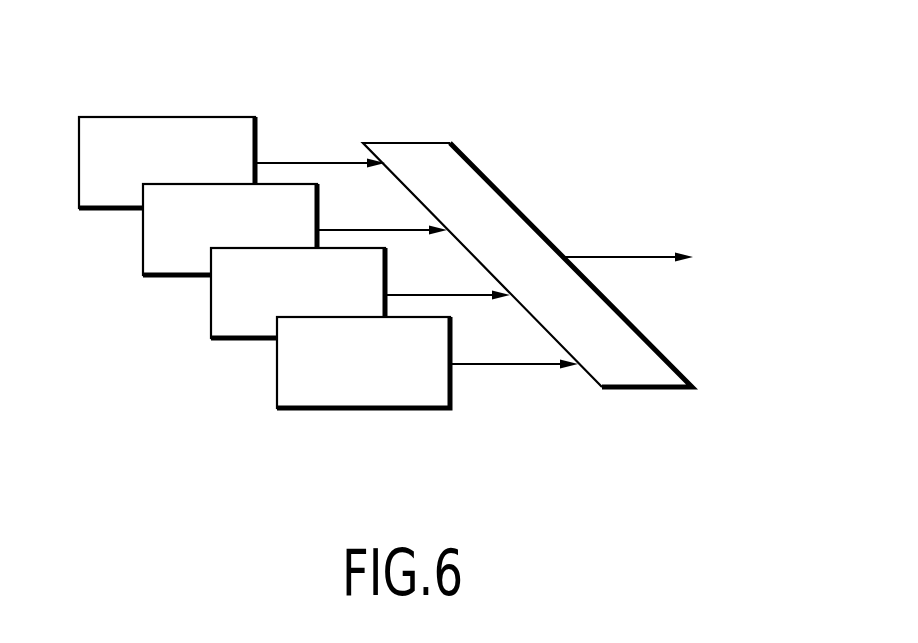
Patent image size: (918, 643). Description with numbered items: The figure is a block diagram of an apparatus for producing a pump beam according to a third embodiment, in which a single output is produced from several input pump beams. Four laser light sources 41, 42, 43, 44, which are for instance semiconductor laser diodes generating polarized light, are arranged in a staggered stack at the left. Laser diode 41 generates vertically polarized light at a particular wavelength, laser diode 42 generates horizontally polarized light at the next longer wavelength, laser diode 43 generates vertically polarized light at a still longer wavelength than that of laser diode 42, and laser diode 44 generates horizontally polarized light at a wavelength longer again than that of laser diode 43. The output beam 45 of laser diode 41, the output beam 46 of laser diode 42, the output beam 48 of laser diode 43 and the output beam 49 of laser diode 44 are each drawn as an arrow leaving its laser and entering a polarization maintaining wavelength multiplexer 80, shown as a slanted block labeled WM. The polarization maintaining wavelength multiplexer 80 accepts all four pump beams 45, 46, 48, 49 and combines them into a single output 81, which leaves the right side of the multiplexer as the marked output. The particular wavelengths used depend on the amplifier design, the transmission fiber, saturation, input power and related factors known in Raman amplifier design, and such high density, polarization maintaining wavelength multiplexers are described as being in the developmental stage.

The laser light source 41 is at (137, 117).
The laser light source 42 is at (143, 240).
The laser light source 43 is at (211, 305).
The laser light source 44 is at (277, 378).
The output beam 45 is at (296, 163).
The output beam 46 is at (338, 229).
The output beam 48 is at (405, 295).
The output beam 49 is at (470, 363).
The polarization maintaining wavelength multiplexer 80 is at (481, 173).
The output 81 is at (635, 258).